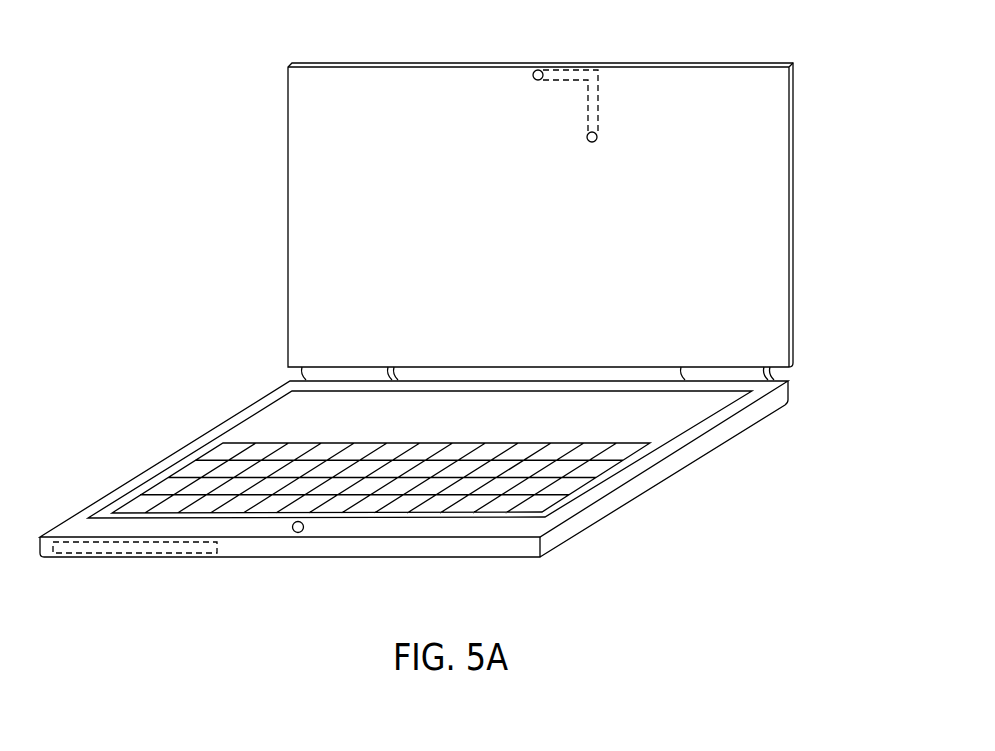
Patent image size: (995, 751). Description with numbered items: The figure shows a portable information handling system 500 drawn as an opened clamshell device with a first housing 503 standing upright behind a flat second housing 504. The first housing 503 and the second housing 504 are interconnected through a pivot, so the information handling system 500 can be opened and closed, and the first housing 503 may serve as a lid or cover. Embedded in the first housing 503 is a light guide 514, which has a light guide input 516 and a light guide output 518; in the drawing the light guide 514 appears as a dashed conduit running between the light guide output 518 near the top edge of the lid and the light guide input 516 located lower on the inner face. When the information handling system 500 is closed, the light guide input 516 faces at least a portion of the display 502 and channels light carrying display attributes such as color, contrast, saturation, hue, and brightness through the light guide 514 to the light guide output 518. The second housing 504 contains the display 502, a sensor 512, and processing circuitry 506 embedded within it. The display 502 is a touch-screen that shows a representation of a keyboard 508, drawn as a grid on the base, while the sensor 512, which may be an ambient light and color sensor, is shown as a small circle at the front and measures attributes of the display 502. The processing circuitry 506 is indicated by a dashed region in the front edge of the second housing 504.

The information handling system 500 is at (143, 98).
The display 502 is at (414, 469).
The first housing 503 is at (793, 140).
The second housing 504 is at (687, 467).
The processing circuitry 506 is at (217, 549).
The keyboard 508 is at (615, 465).
The sensor 512 is at (300, 533).
The light guide 514 is at (600, 85).
The light guide input 516 is at (597, 138).
The light guide output 518 is at (541, 69).